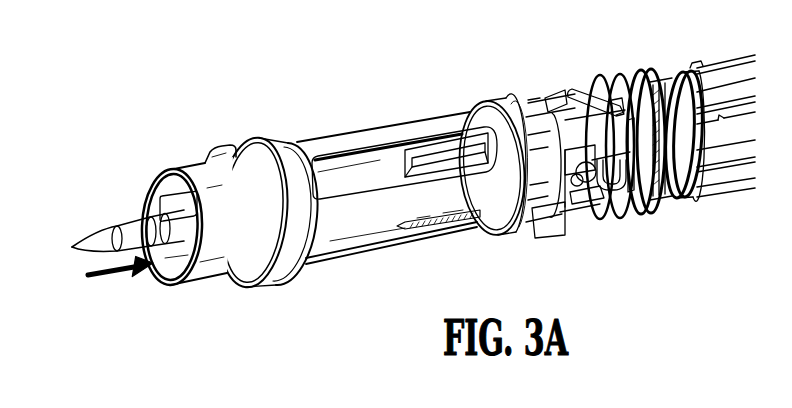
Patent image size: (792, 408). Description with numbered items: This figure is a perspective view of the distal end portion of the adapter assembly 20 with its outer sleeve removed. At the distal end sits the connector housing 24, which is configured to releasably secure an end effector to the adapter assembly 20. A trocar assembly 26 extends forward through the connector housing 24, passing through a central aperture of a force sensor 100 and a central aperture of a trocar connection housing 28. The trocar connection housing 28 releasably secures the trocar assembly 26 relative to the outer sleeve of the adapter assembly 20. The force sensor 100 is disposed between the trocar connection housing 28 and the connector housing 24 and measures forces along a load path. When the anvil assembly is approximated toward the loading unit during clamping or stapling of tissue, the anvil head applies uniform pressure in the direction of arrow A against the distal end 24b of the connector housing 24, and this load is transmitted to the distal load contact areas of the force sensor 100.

The adapter assembly 20 is at (409, 191).
The connector housing 24 is at (370, 130).
The distal end of the connector housing 24b is at (163, 288).
The trocar assembly 26 is at (98, 223).
The trocar connection housing 28 is at (585, 204).
The force sensor 100 is at (540, 160).
The arrow A is at (120, 280).